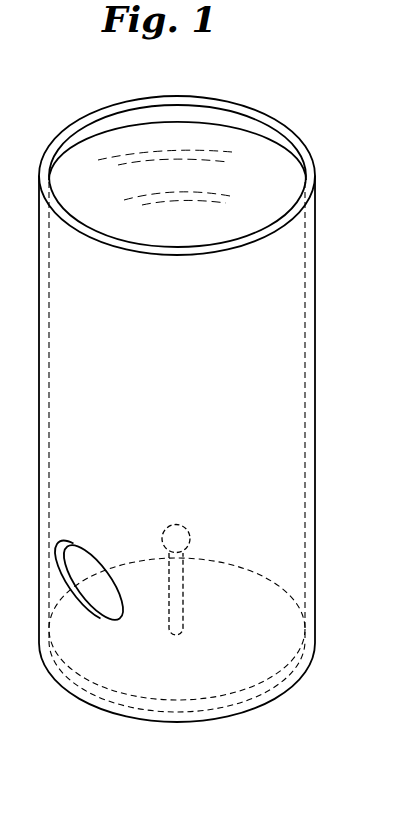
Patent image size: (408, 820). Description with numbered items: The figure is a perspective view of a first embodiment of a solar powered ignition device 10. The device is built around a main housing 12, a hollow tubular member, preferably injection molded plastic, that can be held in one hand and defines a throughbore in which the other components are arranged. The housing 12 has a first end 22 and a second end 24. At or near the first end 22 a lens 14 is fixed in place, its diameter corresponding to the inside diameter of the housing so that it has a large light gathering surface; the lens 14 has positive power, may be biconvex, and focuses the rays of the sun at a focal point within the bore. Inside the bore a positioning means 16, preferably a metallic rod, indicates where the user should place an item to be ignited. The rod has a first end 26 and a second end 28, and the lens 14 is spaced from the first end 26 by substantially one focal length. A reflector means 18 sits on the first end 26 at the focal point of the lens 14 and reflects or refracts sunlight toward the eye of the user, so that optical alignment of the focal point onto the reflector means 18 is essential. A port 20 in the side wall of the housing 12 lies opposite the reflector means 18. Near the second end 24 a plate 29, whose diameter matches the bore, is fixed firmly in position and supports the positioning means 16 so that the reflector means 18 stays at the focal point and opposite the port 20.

The solar powered ignition device 10 is at (202, 438).
The main housing 12 is at (315, 382).
The lens 14 is at (257, 152).
The positioning means 16 is at (275, 629).
The reflector means 18 is at (190, 527).
The port 20 is at (82, 603).
The first end 22 is at (307, 160).
The second end 24 is at (87, 703).
The first end of positioning means 26 is at (187, 552).
The second end of positioning means 28 is at (182, 633).
The plate 29 is at (158, 703).